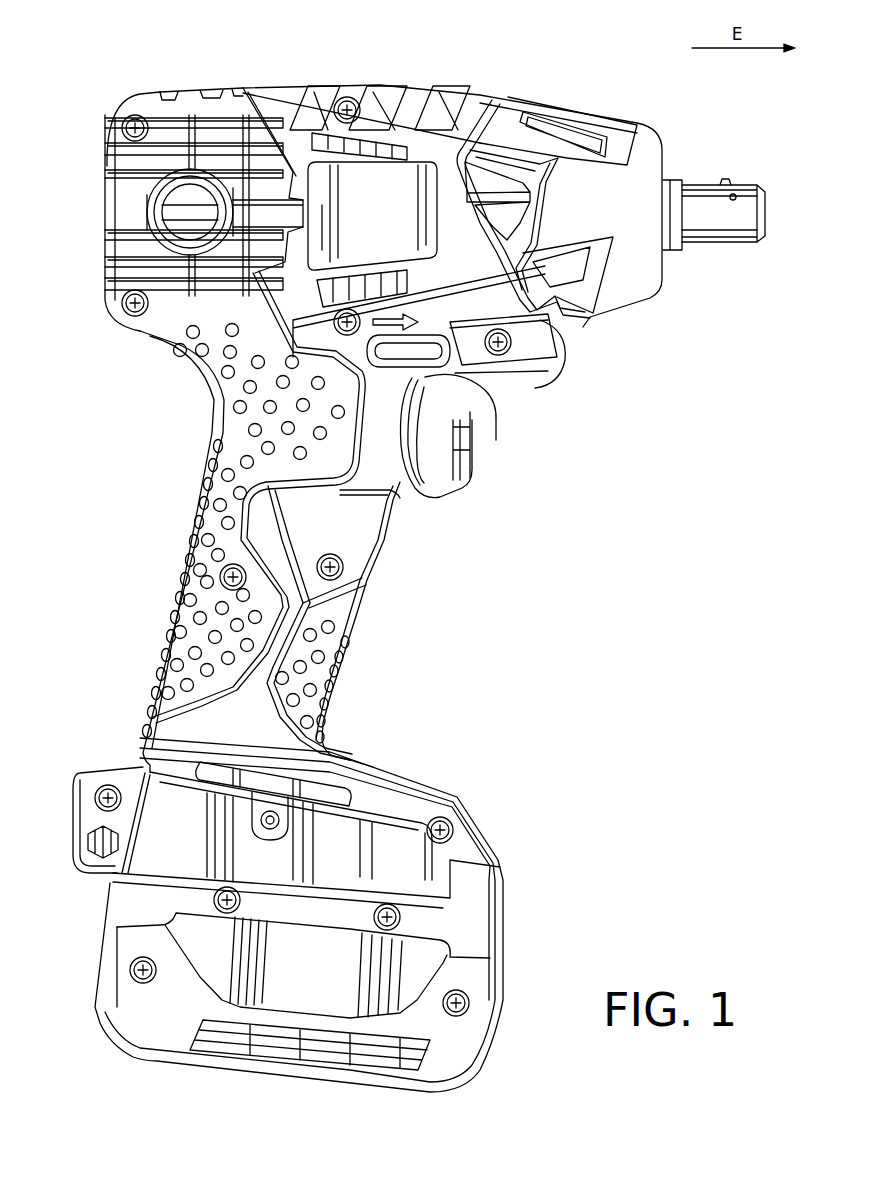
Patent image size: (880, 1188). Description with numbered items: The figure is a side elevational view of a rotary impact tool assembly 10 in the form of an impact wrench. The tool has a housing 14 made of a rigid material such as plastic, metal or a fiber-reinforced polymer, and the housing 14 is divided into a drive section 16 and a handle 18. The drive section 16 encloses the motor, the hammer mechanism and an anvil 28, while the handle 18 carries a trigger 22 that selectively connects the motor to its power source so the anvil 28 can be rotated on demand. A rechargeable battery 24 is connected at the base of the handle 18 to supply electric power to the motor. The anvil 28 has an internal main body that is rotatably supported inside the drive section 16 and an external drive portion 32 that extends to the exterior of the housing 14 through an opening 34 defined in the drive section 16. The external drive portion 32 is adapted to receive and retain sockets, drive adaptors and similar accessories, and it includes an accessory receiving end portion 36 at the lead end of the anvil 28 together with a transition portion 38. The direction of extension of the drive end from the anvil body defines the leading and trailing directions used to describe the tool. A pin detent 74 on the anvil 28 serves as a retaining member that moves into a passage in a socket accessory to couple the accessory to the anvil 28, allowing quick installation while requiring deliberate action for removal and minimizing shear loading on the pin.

The rotary impact tool assembly 10 is at (107, 82).
The housing 14 is at (99, 324).
The drive section 16 is at (107, 165).
The handle 18 is at (200, 510).
The trigger 22 is at (478, 462).
The rechargeable battery 24 is at (500, 898).
The anvil 28 is at (679, 255).
The external drive portion 32 is at (702, 262).
The opening 34 is at (680, 177).
The accessory receiving end portion 36 is at (730, 241).
The transition portion 38 is at (680, 181).
The pin detent 74 is at (739, 173).